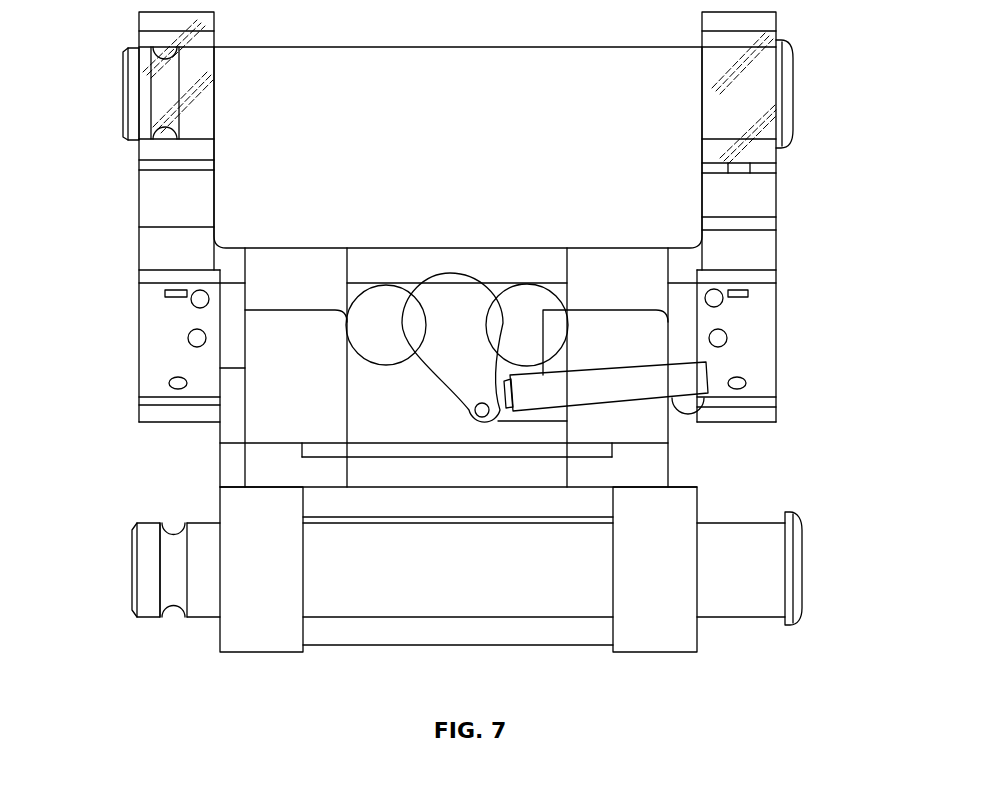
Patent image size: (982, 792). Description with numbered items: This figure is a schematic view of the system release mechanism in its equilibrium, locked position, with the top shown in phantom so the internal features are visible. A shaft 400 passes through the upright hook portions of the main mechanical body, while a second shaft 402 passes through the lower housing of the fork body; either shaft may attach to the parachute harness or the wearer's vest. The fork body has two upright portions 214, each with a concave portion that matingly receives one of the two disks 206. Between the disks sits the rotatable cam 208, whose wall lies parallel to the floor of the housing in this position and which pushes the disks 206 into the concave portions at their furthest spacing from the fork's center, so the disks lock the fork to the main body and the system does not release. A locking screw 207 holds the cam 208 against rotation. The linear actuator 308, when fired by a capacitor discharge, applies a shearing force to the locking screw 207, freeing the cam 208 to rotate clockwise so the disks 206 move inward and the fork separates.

The shaft 400 is at (124, 104).
The shaft 402 is at (797, 570).
The upright portion 214 is at (263, 335).
The disk 206 is at (368, 350).
The locking screw 207 is at (460, 410).
The cam 208 is at (460, 283).
The linear actuator 308 is at (628, 397).